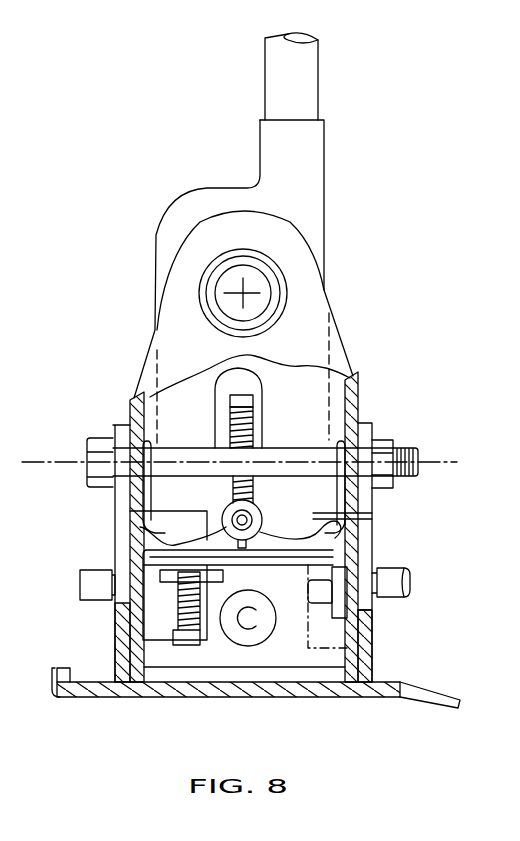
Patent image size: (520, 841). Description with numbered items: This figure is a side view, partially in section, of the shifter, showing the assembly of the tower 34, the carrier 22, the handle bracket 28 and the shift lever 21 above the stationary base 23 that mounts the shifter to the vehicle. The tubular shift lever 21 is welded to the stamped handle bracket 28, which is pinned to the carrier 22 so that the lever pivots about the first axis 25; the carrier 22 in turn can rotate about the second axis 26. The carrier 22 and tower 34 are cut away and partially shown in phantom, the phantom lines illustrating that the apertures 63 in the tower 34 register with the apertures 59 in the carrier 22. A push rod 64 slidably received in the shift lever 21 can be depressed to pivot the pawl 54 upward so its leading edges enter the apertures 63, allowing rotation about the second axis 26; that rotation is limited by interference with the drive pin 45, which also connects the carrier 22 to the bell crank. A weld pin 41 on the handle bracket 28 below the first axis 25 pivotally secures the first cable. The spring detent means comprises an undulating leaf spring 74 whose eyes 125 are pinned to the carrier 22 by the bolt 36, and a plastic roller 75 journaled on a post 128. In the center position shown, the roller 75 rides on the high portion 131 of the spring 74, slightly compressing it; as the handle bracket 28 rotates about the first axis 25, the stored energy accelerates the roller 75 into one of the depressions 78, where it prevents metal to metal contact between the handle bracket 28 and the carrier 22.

The shift lever 21 is at (278, 87).
The handle bracket 28 is at (278, 169).
The shift lever carrier 22 is at (288, 341).
The first axis 25 is at (243, 293).
The eyes 125 is at (143, 396).
The tower 34 is at (363, 437).
The bolt 36 is at (87, 462).
The second axis 26 is at (428, 462).
The apertures 59 is at (166, 520).
The push rod 64 is at (253, 428).
The roller 75 is at (248, 505).
The post 128 is at (247, 520).
The apertures 63 is at (208, 503).
The depressions 78 is at (140, 527).
The undulating leaf spring 74 is at (330, 514).
The high portion 131 is at (238, 546).
The weld pin 41 is at (268, 607).
The drive pin 45 is at (92, 585).
The pawl 54 is at (345, 582).
The base 23 is at (350, 690).